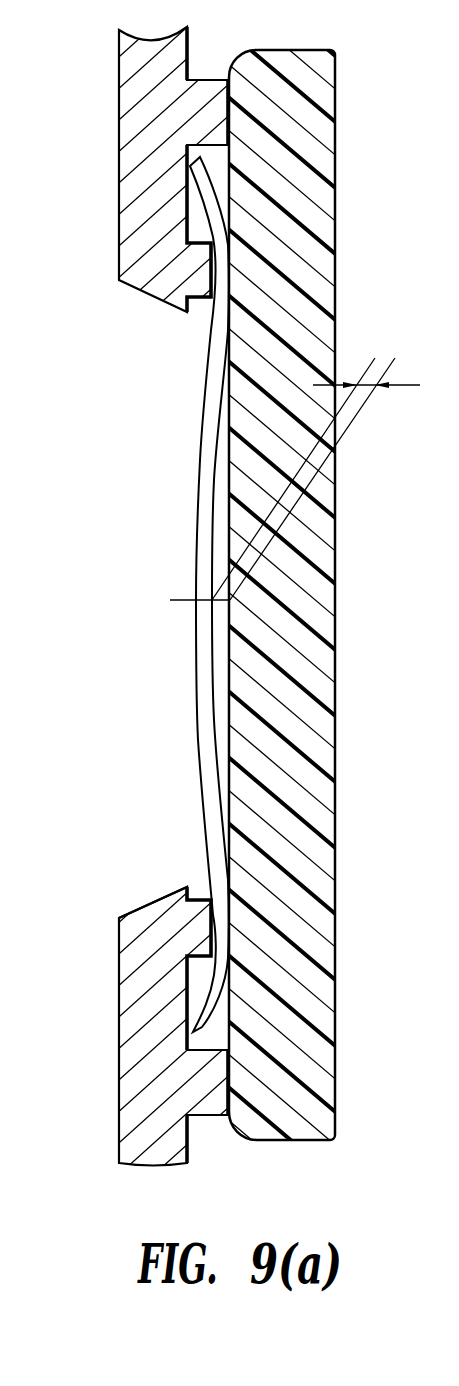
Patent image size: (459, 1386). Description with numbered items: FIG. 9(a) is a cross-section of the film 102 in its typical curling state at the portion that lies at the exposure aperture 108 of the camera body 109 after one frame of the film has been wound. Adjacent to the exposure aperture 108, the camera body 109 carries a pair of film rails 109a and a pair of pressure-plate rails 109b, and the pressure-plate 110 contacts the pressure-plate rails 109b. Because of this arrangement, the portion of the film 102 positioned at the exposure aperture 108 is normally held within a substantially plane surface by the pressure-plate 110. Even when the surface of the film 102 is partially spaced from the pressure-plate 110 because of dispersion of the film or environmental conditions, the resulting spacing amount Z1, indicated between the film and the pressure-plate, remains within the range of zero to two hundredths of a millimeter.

The film 102 is at (198, 765).
The exposure aperture 108 is at (190, 890).
The camera body 109 is at (118, 143).
The film rails 109a is at (210, 275).
The pressure-plate rails 109b is at (228, 100).
The pressure-plate 110 is at (335, 137).
The spacing amount Z1 is at (295, 462).